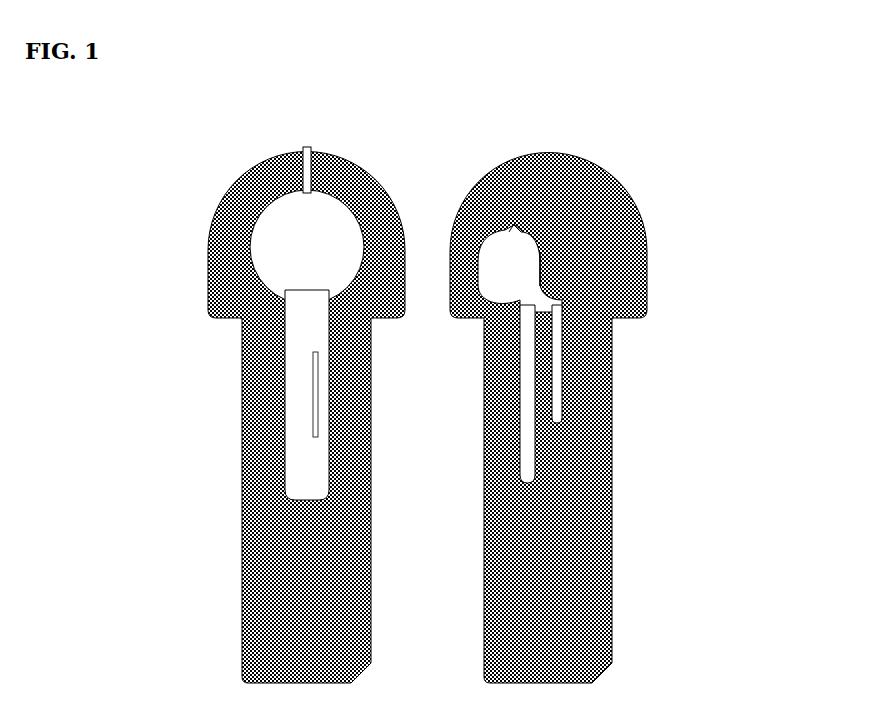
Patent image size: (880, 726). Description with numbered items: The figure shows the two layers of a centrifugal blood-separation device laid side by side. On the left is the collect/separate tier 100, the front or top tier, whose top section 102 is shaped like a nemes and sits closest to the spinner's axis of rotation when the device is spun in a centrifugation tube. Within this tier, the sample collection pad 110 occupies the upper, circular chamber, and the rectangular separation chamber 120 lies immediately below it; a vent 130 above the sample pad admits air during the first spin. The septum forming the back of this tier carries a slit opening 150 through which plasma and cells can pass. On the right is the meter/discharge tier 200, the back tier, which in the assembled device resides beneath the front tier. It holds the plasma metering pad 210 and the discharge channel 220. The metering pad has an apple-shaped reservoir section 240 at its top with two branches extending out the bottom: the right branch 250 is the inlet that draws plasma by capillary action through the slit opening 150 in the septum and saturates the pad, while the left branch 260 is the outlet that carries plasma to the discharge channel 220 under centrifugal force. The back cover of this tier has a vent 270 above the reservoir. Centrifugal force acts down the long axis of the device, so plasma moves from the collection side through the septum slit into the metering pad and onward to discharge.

The collect/separate tier 100 is at (225, 384).
The top section 102 is at (183, 237).
The sample collection pad 110 is at (312, 237).
The separation chamber 120 is at (292, 414).
The vent 130 is at (305, 152).
The slit opening 150 is at (313, 414).
The meter/discharge tier 200 is at (611, 396).
The plasma metering pad 210 is at (507, 262).
The discharge channel 220 is at (531, 609).
The reservoir section 240 is at (537, 273).
The right branch 250 is at (571, 385).
The left branch 260 is at (536, 452).
The vent 270 is at (521, 221).